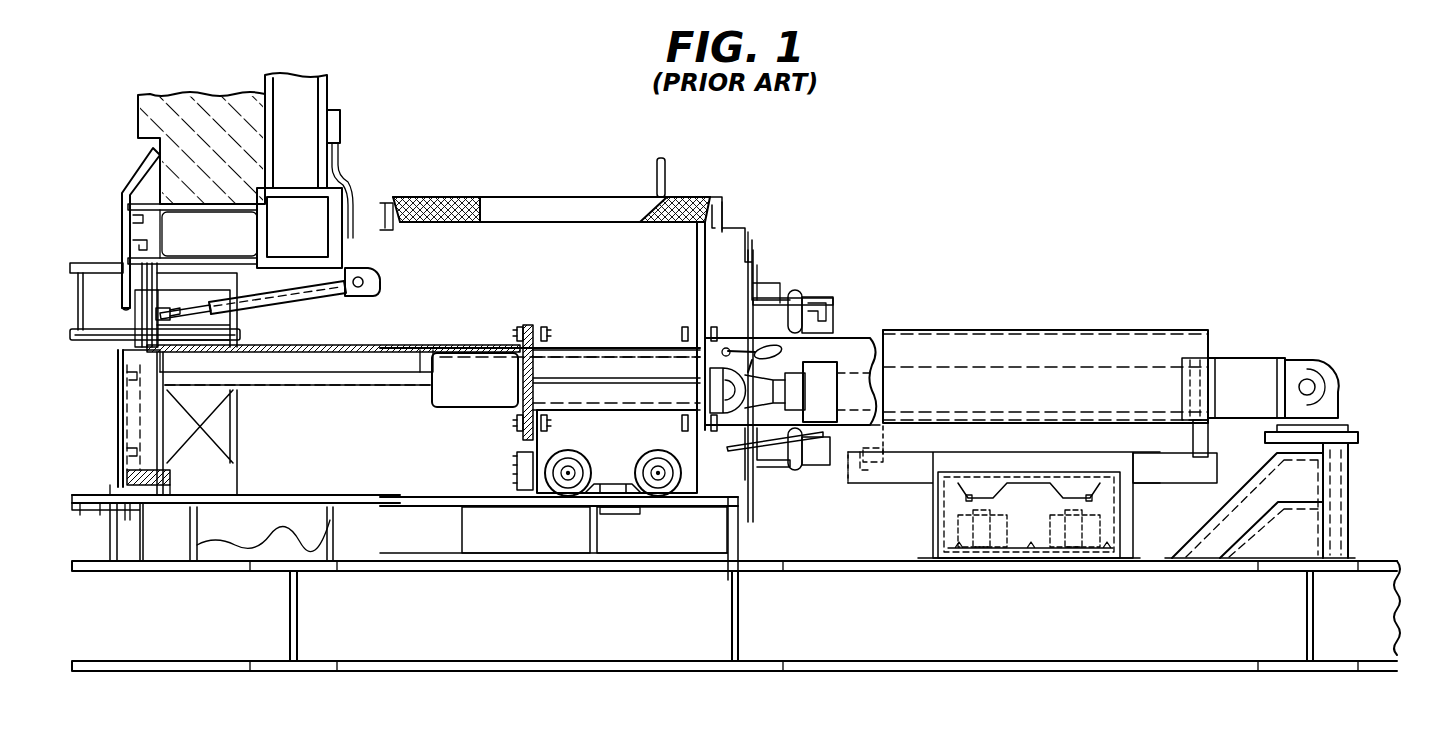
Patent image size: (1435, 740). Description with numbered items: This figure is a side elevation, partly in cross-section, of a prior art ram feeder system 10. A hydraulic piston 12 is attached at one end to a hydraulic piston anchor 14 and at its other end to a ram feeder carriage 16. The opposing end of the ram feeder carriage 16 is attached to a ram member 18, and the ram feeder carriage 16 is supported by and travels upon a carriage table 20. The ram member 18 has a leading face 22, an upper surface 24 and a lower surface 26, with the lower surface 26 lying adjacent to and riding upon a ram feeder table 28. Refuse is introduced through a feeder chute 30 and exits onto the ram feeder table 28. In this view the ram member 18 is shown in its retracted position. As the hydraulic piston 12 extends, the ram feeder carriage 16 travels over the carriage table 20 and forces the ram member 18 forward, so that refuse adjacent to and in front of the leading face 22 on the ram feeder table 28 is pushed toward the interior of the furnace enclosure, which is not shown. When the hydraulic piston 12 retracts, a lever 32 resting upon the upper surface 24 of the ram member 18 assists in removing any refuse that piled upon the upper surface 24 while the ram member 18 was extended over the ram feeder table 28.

The ram feeder system 10 is at (893, 150).
The hydraulic piston 12 is at (1053, 320).
The hydraulic piston anchor 14 is at (1350, 427).
The ram feeder carriage 16 is at (623, 341).
The ram member 18 is at (438, 336).
The carriage table 20 is at (406, 486).
The leading face 22 is at (118, 425).
The upper surface 24 is at (392, 346).
The lower surface 26 is at (127, 482).
The ram feeder table 28 is at (80, 482).
The feeder chute 30 is at (52, 233).
The lever 32 is at (140, 307).